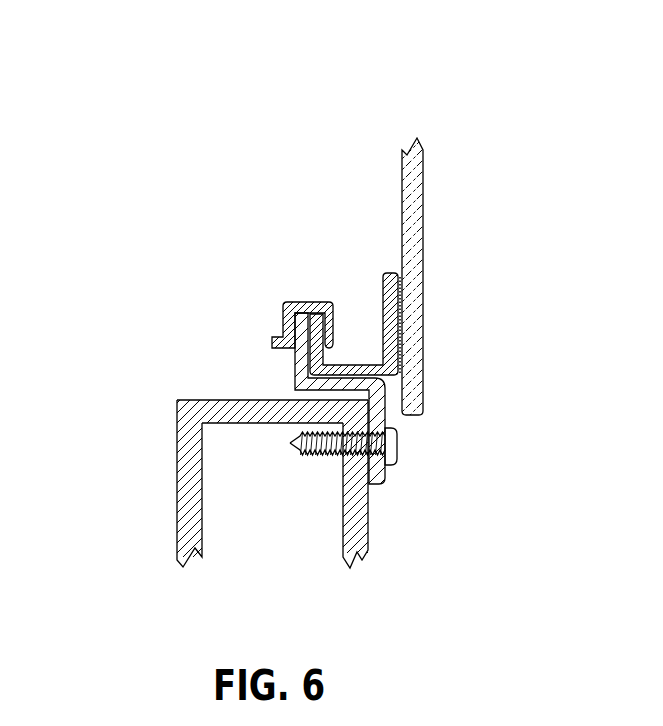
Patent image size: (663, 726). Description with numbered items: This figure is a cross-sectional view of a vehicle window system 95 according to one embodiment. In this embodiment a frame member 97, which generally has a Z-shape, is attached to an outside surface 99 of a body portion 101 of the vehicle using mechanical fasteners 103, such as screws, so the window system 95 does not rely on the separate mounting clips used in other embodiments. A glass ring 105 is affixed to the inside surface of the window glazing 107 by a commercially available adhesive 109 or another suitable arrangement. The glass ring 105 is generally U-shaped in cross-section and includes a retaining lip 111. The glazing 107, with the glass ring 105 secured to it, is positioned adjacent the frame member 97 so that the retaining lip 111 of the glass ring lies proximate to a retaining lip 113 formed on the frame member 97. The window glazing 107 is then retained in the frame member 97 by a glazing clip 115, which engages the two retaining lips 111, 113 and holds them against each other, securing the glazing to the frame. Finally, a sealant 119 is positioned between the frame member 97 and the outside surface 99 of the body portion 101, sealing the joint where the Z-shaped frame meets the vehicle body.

The window system 95 is at (178, 147).
The frame member 97 is at (301, 431).
The outside surface 99 is at (367, 535).
The body portion 101 is at (237, 400).
The mechanical fasteners 103 is at (398, 445).
The glass ring 105 is at (431, 269).
The window glazing 107 is at (424, 247).
The adhesive 109 is at (402, 332).
The retaining lip 111 is at (398, 283).
The retaining lip 113 is at (183, 263).
The glazing clip 115 is at (297, 302).
The sealant 119 is at (370, 485).